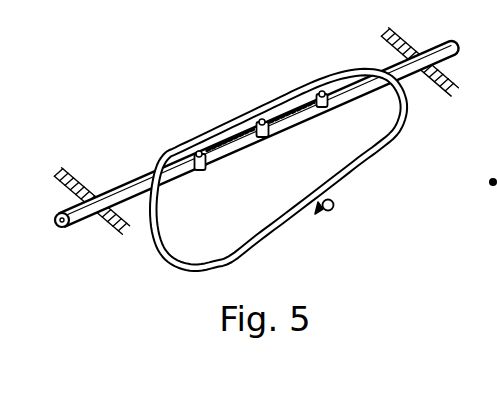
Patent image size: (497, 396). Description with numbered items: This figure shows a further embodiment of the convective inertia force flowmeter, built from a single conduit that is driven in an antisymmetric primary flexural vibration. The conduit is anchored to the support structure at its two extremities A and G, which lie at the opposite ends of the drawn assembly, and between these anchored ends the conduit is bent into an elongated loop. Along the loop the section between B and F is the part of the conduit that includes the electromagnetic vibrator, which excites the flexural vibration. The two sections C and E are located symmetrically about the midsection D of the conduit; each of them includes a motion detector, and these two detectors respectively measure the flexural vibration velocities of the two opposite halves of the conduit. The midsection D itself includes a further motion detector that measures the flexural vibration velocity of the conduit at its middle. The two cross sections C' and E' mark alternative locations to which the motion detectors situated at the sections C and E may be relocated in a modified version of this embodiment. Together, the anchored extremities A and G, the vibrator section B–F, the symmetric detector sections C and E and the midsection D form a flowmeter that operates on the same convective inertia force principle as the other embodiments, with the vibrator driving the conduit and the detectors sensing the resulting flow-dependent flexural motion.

The conduit extremity A is at (103, 184).
The vibrator section end B is at (263, 110).
The motion detector section C is at (278, 141).
The alternative motion detector cross section C' is at (230, 104).
The midsection D is at (335, 212).
The motion detector section E is at (200, 197).
The alternative motion detector cross section E' is at (315, 135).
The vibrator section end F is at (263, 146).
The conduit extremity G is at (437, 95).